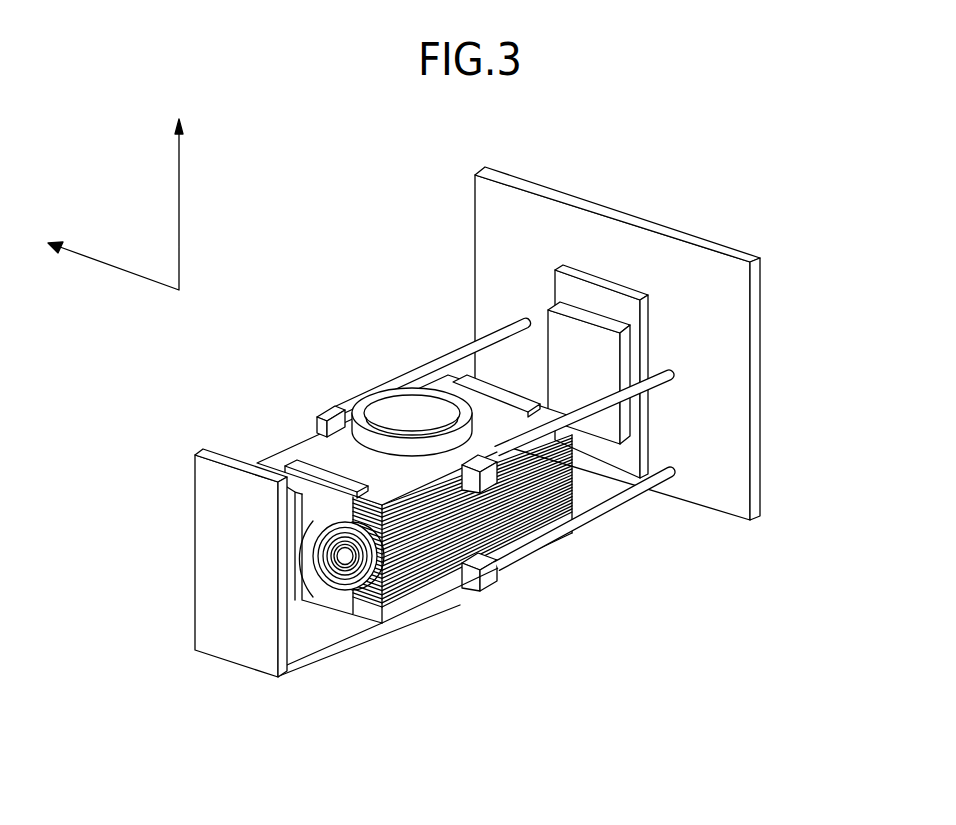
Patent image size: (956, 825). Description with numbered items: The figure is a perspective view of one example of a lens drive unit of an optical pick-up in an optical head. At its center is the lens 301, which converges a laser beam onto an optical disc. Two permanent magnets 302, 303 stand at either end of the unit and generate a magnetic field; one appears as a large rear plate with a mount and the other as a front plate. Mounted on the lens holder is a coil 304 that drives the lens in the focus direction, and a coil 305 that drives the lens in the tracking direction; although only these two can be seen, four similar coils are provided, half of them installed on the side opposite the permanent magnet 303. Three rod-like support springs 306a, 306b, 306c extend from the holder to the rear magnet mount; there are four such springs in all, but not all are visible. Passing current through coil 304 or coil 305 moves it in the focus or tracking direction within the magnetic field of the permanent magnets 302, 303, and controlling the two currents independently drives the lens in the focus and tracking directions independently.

The lens 301 is at (365, 403).
The permanent magnet 302 is at (627, 340).
The permanent magnet 303 is at (293, 598).
The coil 304 is at (522, 515).
The coil 305 is at (348, 591).
The support spring 306a is at (663, 378).
The support spring 306b is at (665, 478).
The support spring 306c is at (458, 352).